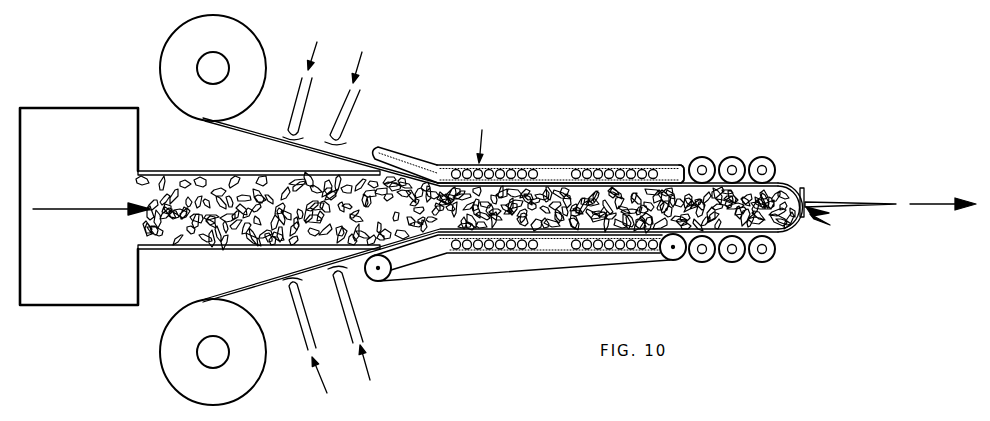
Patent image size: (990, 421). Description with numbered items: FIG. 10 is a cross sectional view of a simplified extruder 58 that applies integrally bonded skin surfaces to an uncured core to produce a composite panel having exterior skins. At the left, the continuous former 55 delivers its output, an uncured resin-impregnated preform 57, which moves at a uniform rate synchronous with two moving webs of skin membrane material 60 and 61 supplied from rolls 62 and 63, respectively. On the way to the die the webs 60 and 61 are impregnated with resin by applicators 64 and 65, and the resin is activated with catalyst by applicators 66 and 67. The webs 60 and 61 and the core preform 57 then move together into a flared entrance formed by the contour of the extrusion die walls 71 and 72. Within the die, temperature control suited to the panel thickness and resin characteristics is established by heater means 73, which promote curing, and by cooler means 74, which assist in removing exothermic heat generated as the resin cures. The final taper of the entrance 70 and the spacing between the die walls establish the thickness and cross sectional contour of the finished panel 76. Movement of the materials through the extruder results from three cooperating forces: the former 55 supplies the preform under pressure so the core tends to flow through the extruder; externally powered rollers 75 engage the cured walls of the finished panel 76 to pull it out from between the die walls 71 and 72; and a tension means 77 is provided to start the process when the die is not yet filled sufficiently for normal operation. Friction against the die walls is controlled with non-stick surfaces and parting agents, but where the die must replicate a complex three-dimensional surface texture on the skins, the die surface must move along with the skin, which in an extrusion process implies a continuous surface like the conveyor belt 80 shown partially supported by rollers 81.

The former 55 is at (107, 106).
The uncured resin-impregnated preform 57 is at (196, 176).
The extruder 58 is at (490, 137).
The web of skin membrane material 60 is at (238, 290).
The web of skin membrane material 61 is at (243, 133).
The roll 62 is at (162, 353).
The roll 63 is at (246, 29).
The resin applicator 64 is at (299, 336).
The resin applicator 65 is at (296, 98).
The catalyst applicator 66 is at (352, 110).
The catalyst applicator 67 is at (358, 320).
The entrance 70 is at (377, 154).
The extrusion die wall 71 is at (438, 163).
The extrusion die wall 72 is at (447, 246).
The heater means 73 is at (505, 168).
The cooler means 74 is at (588, 164).
The rollers 75 is at (710, 157).
The finished panel 76 is at (687, 166).
The tension means 77 is at (843, 202).
The conveyor belt 80 is at (508, 272).
The rollers 81 is at (378, 282).